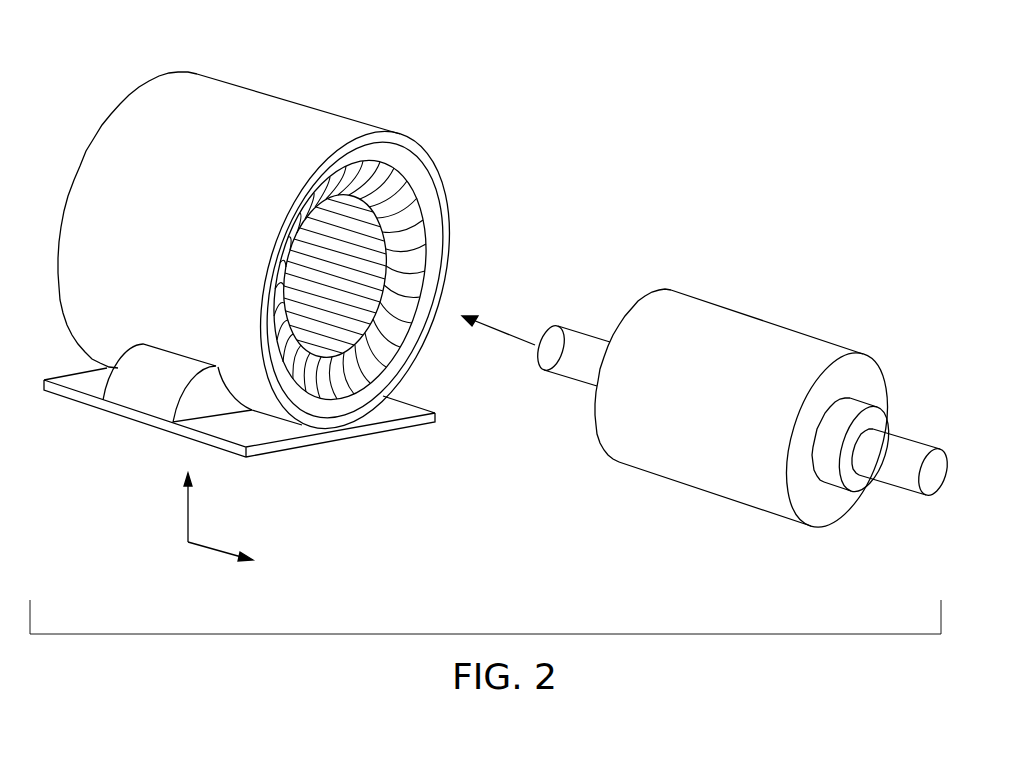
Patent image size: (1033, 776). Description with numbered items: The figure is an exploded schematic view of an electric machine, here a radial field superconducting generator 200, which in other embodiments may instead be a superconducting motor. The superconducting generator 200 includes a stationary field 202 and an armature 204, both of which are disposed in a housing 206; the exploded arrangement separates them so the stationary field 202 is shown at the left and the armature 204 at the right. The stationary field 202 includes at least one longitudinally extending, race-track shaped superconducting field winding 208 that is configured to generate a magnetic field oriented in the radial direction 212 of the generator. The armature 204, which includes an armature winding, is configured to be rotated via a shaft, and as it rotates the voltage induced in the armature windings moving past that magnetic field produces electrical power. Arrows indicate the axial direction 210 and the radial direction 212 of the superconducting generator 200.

The superconducting generator 200 is at (602, 75).
The stationary field 202 is at (277, 244).
The armature 204 is at (793, 305).
The housing 206 is at (263, 93).
The superconducting field winding 208 is at (408, 200).
The axial direction 210 is at (210, 548).
The radial direction 212 is at (187, 507).